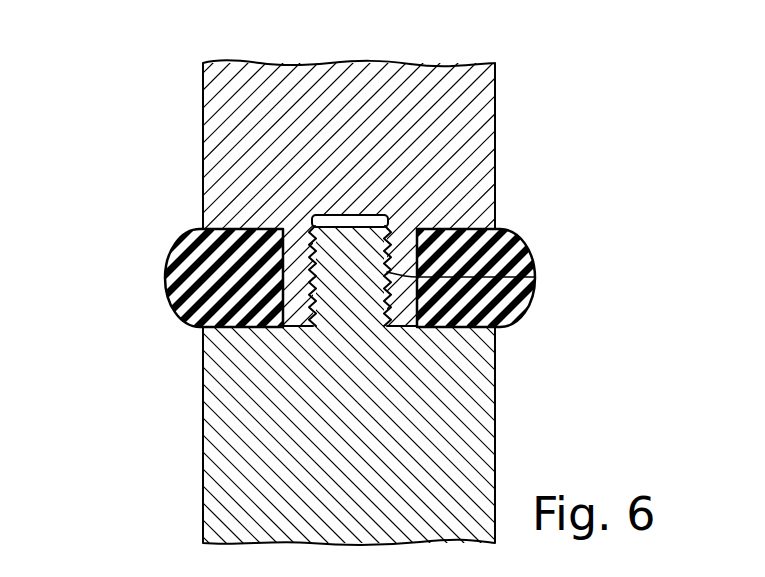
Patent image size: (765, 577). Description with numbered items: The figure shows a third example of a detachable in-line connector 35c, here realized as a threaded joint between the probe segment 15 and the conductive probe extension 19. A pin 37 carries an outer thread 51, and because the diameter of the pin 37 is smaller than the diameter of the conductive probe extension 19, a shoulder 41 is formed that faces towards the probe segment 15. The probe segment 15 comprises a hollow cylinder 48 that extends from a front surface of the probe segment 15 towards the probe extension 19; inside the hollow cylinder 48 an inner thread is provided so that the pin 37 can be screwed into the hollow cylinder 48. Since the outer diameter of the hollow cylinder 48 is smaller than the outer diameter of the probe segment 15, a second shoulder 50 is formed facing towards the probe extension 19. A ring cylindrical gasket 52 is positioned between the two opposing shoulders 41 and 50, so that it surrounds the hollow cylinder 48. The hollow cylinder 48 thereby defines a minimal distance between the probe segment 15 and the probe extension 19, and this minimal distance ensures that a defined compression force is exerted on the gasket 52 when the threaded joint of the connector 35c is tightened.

The detachable in-line connector 35c is at (146, 156).
The probe segment 15 is at (460, 118).
The conductive probe extension 19 is at (440, 417).
The pin 37 is at (348, 273).
The shoulder 41 is at (312, 324).
The hollow cylinder 48 is at (402, 243).
The shoulder 50 is at (450, 227).
The outer thread 51 is at (535, 277).
The ring cylindrical gasket 52 is at (213, 262).